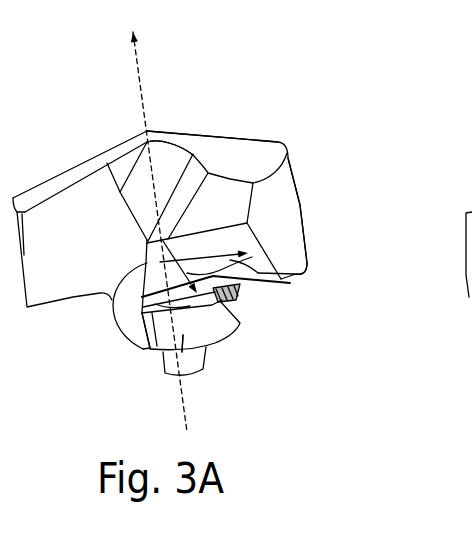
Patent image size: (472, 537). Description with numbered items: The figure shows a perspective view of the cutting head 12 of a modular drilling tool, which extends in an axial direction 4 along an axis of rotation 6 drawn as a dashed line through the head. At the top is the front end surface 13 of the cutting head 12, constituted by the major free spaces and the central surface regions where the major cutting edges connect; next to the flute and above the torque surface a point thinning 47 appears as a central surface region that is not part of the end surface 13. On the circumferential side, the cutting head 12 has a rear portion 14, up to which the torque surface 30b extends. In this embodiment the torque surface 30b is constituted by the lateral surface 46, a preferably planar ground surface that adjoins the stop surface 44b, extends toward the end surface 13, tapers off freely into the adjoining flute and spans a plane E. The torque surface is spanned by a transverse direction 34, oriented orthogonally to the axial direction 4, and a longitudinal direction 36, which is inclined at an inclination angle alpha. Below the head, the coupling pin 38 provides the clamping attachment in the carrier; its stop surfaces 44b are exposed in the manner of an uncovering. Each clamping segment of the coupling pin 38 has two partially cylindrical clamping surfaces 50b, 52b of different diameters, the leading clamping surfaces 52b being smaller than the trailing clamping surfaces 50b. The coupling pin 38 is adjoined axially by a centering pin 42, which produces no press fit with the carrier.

The axial direction 4 is at (111, 221).
The axis of rotation 6 is at (136, 61).
The cutting head 12 is at (236, 124).
The front end surface 13 is at (261, 155).
The rear portion 14 is at (293, 227).
The torque surface 30b is at (289, 212).
The lateral surface 46 is at (209, 263).
The transverse direction 34 is at (302, 276).
The longitudinal direction 36 is at (242, 305).
The coupling pin 38 is at (140, 351).
The centering pin 42 is at (205, 370).
The stop surface 44b is at (143, 313).
The point thinning 47 is at (167, 153).
The clamping surface 50b is at (228, 322).
The clamping surface 52b is at (183, 355).
The inclination angle alpha is at (110, 312).